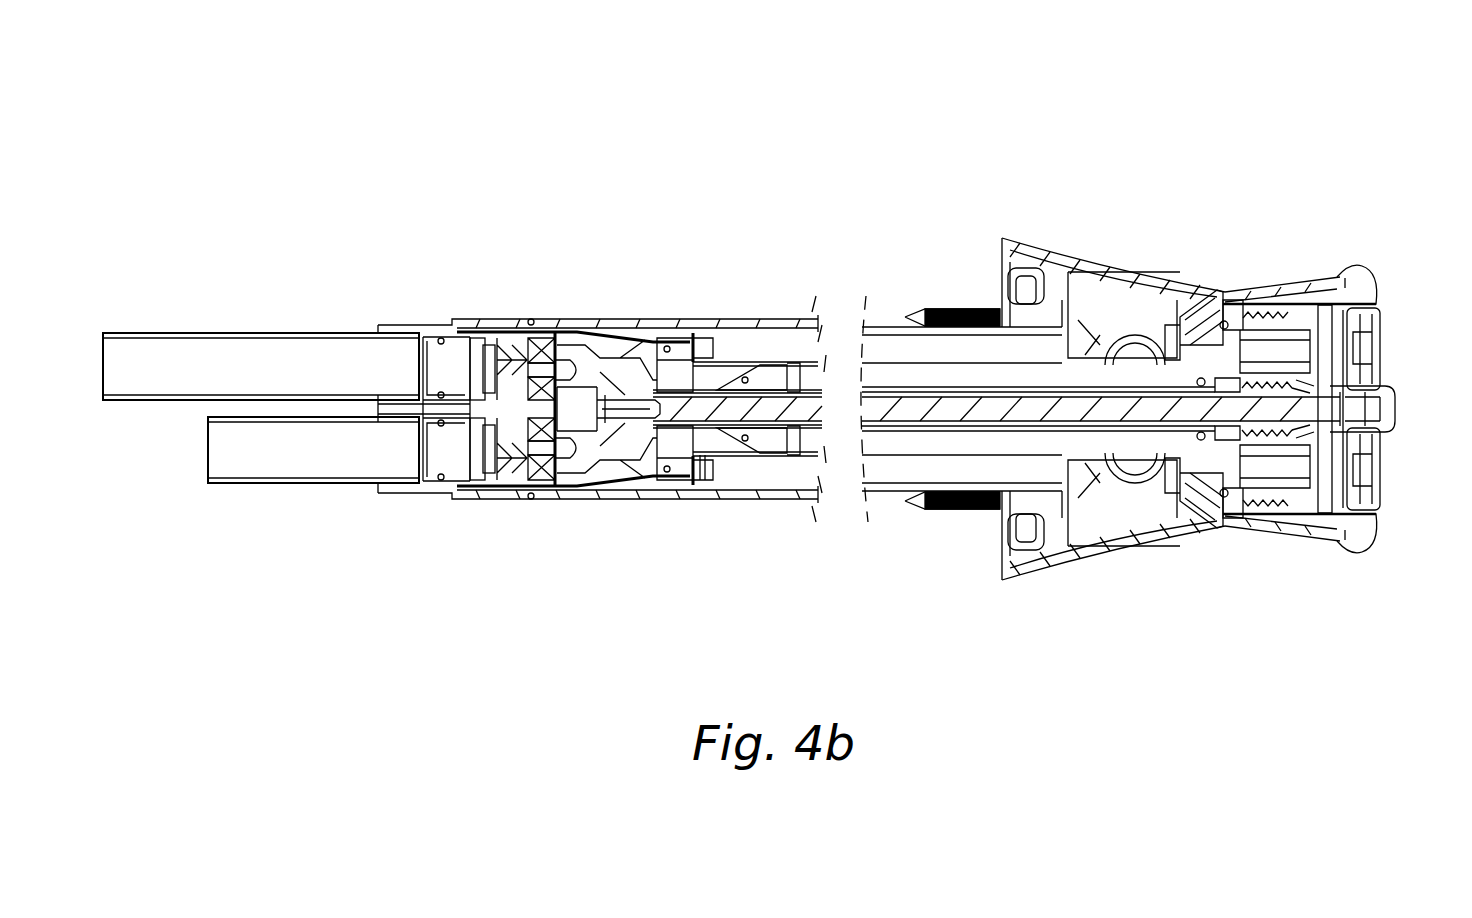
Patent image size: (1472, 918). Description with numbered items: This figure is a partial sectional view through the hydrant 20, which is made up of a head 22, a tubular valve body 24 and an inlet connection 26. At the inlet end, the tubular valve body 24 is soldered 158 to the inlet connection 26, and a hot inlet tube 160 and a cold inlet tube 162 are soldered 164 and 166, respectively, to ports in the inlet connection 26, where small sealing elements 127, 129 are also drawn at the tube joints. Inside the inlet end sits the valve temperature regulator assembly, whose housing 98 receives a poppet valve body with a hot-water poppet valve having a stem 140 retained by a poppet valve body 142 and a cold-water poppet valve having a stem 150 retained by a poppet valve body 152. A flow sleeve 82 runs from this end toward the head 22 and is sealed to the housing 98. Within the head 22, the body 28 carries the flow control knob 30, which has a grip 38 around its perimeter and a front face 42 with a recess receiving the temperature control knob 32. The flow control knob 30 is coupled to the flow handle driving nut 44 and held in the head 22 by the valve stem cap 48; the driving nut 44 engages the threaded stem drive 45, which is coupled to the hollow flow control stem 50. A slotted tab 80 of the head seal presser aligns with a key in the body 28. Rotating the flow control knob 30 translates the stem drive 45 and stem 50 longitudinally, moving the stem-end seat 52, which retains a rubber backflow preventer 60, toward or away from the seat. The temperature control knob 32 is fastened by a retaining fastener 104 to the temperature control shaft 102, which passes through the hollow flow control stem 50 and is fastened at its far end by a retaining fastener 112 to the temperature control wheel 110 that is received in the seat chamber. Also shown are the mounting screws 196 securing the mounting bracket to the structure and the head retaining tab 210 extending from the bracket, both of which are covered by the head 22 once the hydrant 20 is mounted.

The hydrant 20 is at (445, 180).
The head 22 is at (1290, 150).
The tubular valve body 24 is at (725, 498).
The inlet connection 26 is at (460, 320).
The body 28 is at (1122, 283).
The flow control knob 30 is at (1353, 278).
The temperature control knob 32 is at (1383, 352).
The grip 38 is at (1316, 545).
The front face 42 is at (1370, 285).
The flow handle driving nut 44 is at (1262, 470).
The stem drive 45 is at (1242, 500).
The valve stem cap 48 is at (1270, 318).
The hollow flow control stem 50 is at (762, 445).
The stem-end seat 52 is at (700, 338).
The rubber backflow preventer 60 is at (762, 370).
The slotted tab 80 is at (1195, 318).
The flow sleeve 82 is at (755, 466).
The housing 98 is at (648, 340).
The temperature control shaft 102 is at (780, 398).
The temperature control knob retaining fastener 104 is at (1395, 405).
The temperature control wheel 110 is at (596, 335).
The temperature control shaft retaining fastener 112 is at (630, 482).
The o-ring 127 is at (441, 338).
The o-ring 129 is at (441, 480).
The stem 140 is at (557, 345).
The poppet valve body 142 is at (531, 320).
The stem 150 is at (565, 492).
The poppet valve body 152 is at (532, 492).
The solder 158 is at (535, 500).
The hot inlet tube 160 is at (233, 348).
The cold inlet tube 162 is at (252, 467).
The solder 164 is at (378, 330).
The solder 166 is at (378, 488).
The mounting screws 196 is at (957, 518).
The head retaining tab 210 is at (1025, 540).